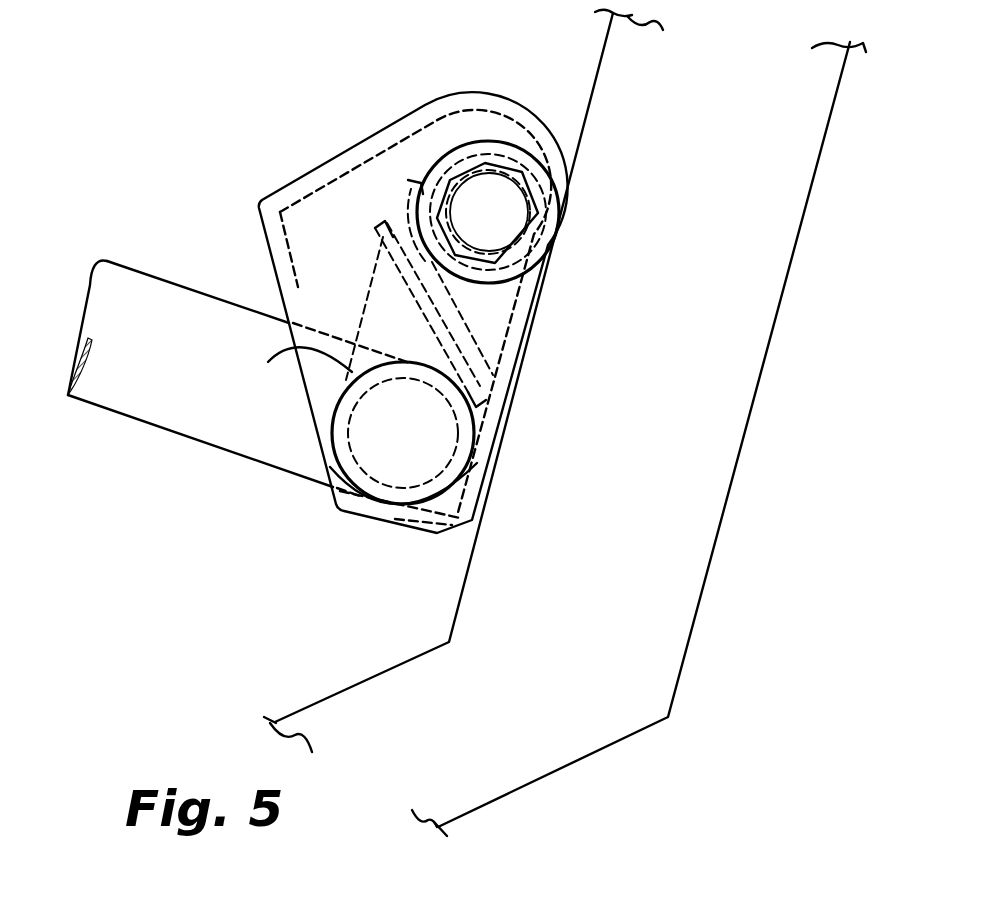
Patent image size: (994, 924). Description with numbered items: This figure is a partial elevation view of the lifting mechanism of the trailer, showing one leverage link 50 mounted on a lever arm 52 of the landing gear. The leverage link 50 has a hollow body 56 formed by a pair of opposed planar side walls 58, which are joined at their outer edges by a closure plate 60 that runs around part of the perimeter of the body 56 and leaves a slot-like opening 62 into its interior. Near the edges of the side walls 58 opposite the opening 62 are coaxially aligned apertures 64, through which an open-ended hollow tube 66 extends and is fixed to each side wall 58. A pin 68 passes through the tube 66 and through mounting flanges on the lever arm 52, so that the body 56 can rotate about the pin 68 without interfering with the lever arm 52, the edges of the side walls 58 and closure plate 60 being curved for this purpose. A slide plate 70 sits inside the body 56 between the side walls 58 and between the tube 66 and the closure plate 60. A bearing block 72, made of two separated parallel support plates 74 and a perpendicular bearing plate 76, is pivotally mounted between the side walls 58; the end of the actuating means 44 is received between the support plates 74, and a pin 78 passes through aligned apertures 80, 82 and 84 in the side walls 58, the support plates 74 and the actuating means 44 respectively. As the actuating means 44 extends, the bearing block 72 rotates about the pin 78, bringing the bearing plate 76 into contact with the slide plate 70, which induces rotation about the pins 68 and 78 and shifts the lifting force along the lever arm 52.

The actuator means 44 is at (111, 397).
The leverage link 50 is at (213, 213).
The lever arm 52 is at (668, 466).
The hollow body 56 is at (386, 120).
The side wall 58 is at (485, 315).
The closure plate 60 is at (334, 178).
The slot-like opening 62 is at (297, 318).
The aperture 64 is at (513, 132).
The hollow tube 66 is at (530, 165).
The pin 68 is at (496, 228).
The slide plate 70 is at (485, 365).
The bearing block 72 is at (333, 388).
The support plate 74 is at (275, 349).
The bearing plate 76 is at (480, 398).
The pin 78 is at (388, 468).
The aperture 80 is at (455, 496).
The aperture 82 is at (455, 467).
The aperture 84 is at (332, 470).